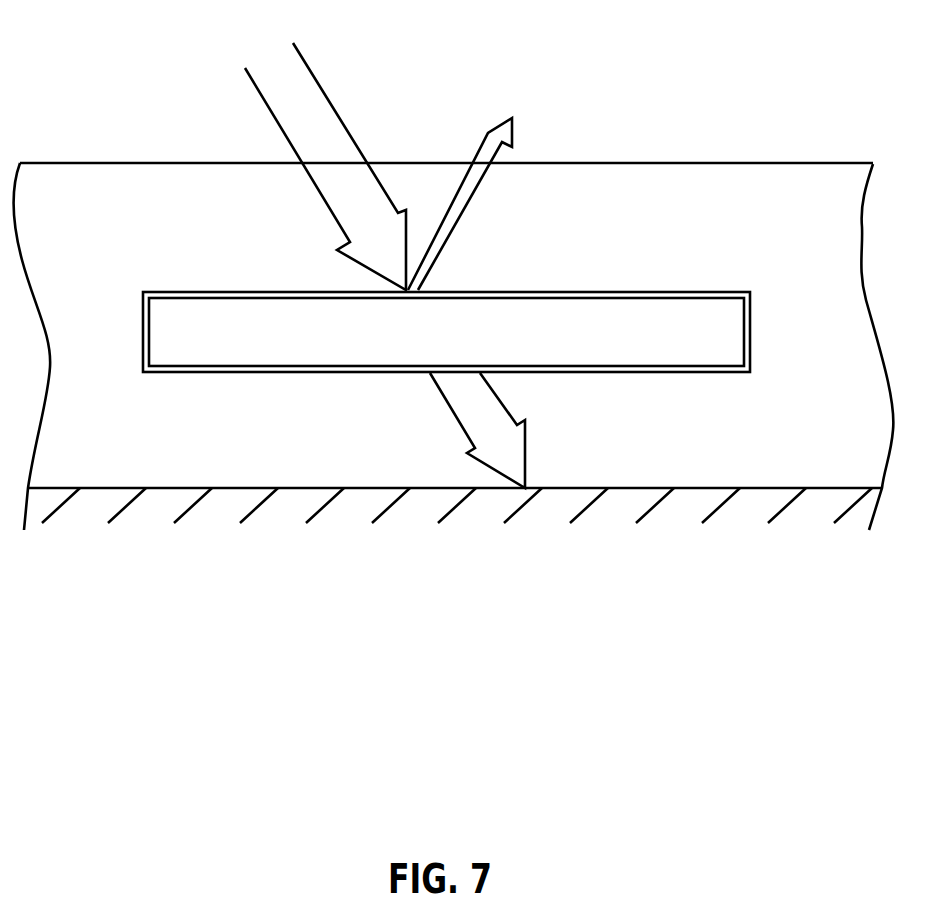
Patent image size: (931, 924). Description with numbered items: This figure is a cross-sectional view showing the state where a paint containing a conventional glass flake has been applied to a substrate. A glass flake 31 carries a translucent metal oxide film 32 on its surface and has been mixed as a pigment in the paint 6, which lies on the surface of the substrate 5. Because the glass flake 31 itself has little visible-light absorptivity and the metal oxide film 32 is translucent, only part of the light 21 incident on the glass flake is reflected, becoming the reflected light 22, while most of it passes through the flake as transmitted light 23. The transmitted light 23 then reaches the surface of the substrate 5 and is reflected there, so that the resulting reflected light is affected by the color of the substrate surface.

The substrate 5 is at (678, 515).
The paint 6 is at (765, 217).
The light 21 is at (343, 205).
The reflected light 22 is at (462, 208).
The transmitted light 23 is at (467, 410).
The glass flake 31 is at (639, 344).
The translucent metal oxide film 32 is at (719, 371).